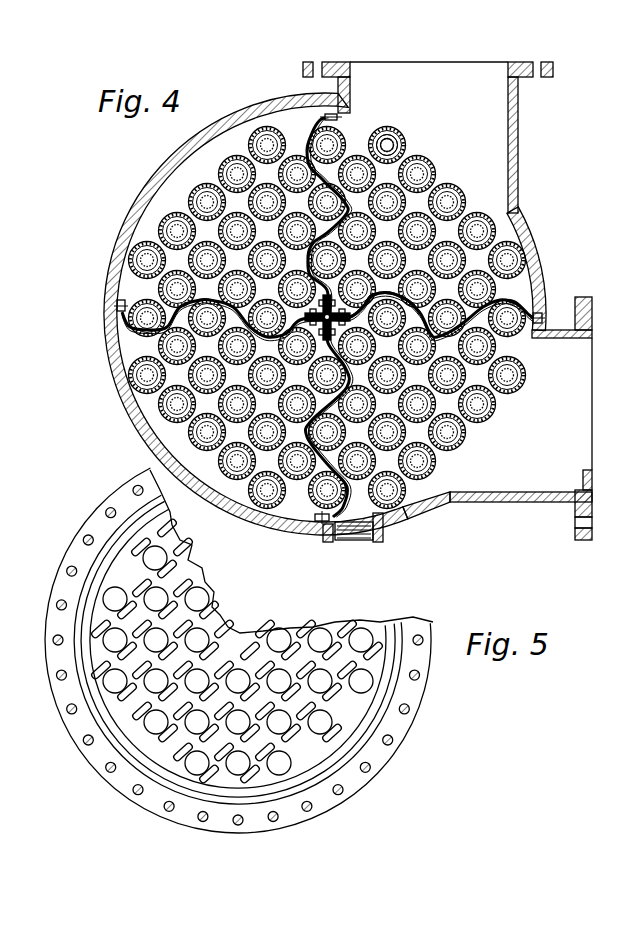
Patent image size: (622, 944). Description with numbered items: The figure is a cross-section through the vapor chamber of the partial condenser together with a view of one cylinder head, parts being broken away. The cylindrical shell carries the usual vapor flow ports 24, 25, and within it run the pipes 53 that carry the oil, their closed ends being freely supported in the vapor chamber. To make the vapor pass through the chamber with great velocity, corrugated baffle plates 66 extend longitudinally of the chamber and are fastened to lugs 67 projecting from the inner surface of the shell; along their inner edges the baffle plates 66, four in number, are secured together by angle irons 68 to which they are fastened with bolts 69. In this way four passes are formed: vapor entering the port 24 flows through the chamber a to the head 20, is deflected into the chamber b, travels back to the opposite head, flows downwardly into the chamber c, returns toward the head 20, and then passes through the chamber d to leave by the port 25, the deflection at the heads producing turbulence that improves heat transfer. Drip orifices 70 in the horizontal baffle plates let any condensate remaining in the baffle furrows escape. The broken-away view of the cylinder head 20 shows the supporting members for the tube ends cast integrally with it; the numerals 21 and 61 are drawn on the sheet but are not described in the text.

In FIG. 5, the cylinder head 20 is at (422, 714).
In FIG. 5, the bolt holes 21 is at (237, 655).
In FIG. 4, the vapor flow port 24 is at (460, 76).
In FIG. 4, the vapor flow port 25 is at (592, 463).
In FIG. 4, the pipe 53 is at (400, 133).
In FIG. 4, the ferrule 61 is at (392, 147).
In FIG. 4, the corrugated baffle plate 66 is at (313, 122).
In FIG. 4, the lug 67 is at (340, 118).
In FIG. 4, the angle iron 68 is at (334, 311).
In FIG. 4, the bolt 69 is at (376, 294).
In FIG. 4, the drip orifice 70 is at (162, 340).
In FIG. 4, the chamber a is at (500, 178).
In FIG. 4, the chamber b is at (181, 184).
In FIG. 4, the chamber c is at (148, 402).
In FIG. 4, the chamber d is at (422, 493).